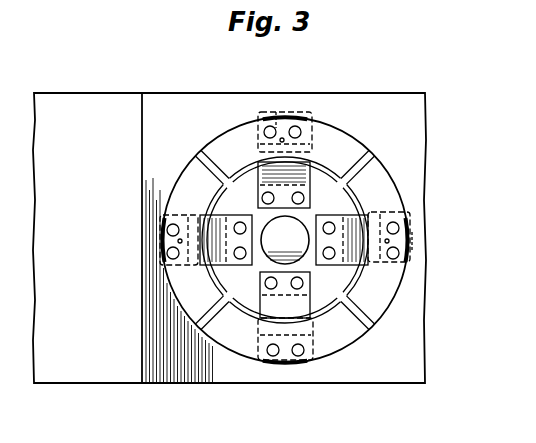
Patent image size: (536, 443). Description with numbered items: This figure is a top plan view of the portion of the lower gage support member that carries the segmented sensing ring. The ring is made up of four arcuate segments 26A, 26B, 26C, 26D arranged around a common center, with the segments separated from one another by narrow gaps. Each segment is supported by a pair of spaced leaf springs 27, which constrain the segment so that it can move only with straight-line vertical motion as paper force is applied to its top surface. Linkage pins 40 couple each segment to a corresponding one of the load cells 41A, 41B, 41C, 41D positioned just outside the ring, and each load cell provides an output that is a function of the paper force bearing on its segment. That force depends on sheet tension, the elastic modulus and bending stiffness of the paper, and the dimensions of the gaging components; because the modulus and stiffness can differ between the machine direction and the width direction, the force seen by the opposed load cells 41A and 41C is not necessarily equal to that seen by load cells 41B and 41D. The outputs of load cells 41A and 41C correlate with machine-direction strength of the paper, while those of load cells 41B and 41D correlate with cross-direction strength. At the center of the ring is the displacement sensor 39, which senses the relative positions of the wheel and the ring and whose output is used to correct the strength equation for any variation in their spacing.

The ring segment 26A is at (396, 190).
The ring segment 26B is at (232, 137).
The ring segment 26C is at (182, 300).
The ring segment 26D is at (350, 350).
The leaf spring 27 is at (234, 214).
The displacement sensor 39 is at (285, 240).
The linkage pin 40 is at (278, 110).
The load cell 41A is at (415, 255).
The load cell 41B is at (300, 100).
The load cell 41C is at (160, 230).
The load cell 41D is at (281, 368).